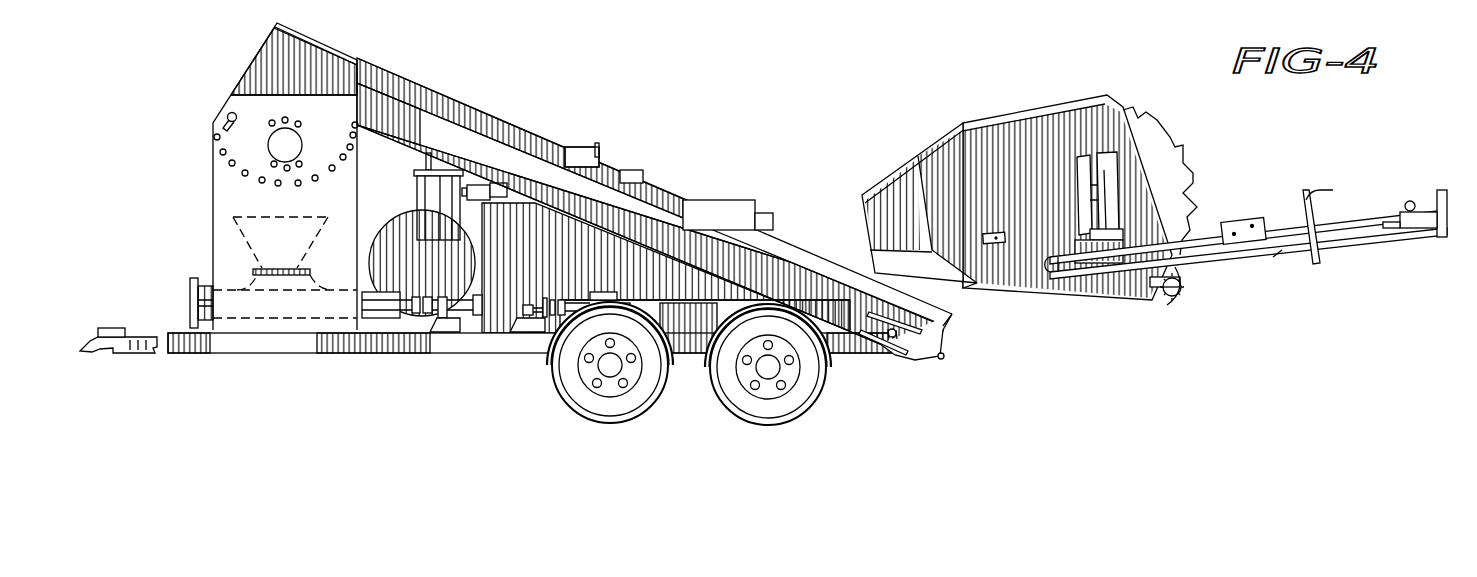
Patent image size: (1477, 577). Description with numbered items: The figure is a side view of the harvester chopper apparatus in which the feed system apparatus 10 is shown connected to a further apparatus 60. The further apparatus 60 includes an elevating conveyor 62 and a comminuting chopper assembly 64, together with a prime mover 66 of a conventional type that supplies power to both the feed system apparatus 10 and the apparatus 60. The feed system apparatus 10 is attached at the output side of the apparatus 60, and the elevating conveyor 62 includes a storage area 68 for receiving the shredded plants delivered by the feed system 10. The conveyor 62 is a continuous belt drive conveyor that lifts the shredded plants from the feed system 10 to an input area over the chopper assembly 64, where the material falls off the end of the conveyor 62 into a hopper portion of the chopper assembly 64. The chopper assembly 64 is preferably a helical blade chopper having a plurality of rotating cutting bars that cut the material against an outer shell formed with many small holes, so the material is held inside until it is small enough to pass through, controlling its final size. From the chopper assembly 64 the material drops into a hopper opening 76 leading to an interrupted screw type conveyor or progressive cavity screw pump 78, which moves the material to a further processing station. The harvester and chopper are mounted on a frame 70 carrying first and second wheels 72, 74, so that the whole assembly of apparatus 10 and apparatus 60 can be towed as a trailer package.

The feed system apparatus 10 is at (1086, 84).
The further apparatus 60 is at (543, 224).
The elevating conveyor 62 is at (679, 198).
The comminuting chopper assembly 64 is at (224, 88).
The prime mover 66 is at (602, 160).
The storage area 68 is at (953, 311).
The frame 70 is at (283, 354).
The first wheel 72 is at (553, 383).
The second wheel 74 is at (823, 393).
The hopper opening 76 is at (309, 235).
The progressive cavity screw pump 78 is at (312, 268).